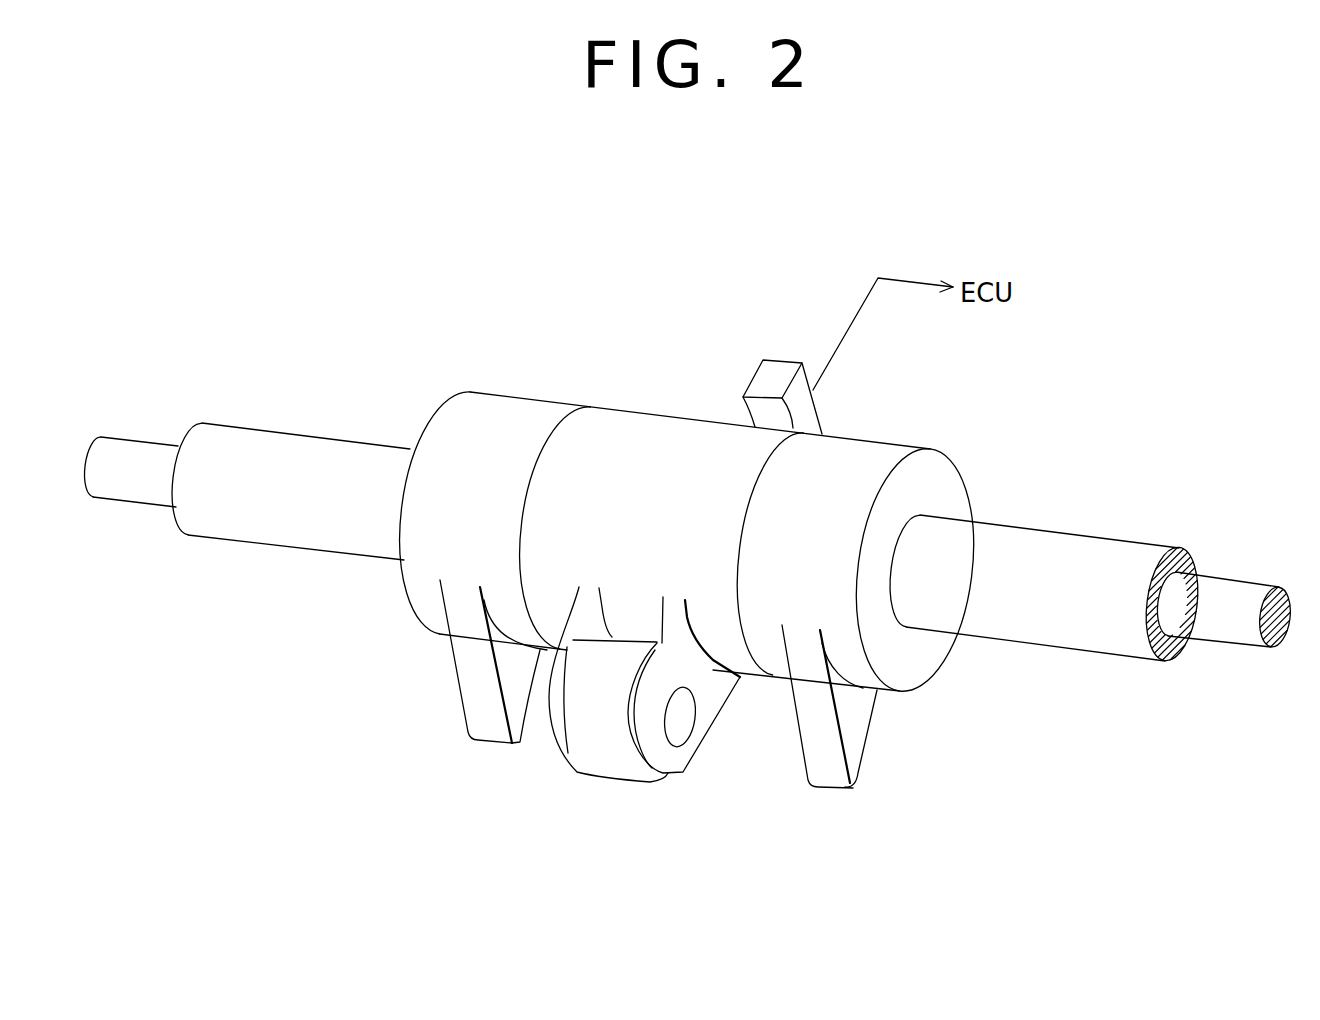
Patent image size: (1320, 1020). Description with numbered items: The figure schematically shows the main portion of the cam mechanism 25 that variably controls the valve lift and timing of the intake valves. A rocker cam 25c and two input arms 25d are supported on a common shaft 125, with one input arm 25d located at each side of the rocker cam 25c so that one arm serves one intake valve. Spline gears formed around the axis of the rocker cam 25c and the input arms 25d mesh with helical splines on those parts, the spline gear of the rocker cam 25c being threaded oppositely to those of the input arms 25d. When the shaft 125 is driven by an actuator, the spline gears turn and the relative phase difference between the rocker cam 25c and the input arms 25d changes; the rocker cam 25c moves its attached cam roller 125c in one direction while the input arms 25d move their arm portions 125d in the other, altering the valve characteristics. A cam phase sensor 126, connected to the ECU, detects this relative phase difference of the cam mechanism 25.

The cam mechanism 25 is at (838, 278).
The rocker cam 25c is at (647, 408).
The input arms 25d is at (488, 390).
The shaft 125 is at (1228, 588).
The cam roller 125c is at (610, 763).
The arm portions 125d is at (480, 717).
The cam phase sensor 126 is at (782, 372).